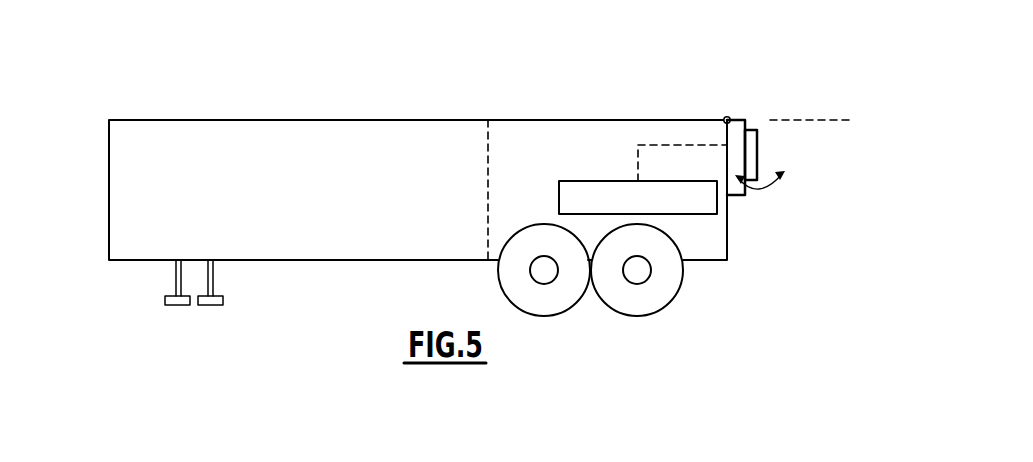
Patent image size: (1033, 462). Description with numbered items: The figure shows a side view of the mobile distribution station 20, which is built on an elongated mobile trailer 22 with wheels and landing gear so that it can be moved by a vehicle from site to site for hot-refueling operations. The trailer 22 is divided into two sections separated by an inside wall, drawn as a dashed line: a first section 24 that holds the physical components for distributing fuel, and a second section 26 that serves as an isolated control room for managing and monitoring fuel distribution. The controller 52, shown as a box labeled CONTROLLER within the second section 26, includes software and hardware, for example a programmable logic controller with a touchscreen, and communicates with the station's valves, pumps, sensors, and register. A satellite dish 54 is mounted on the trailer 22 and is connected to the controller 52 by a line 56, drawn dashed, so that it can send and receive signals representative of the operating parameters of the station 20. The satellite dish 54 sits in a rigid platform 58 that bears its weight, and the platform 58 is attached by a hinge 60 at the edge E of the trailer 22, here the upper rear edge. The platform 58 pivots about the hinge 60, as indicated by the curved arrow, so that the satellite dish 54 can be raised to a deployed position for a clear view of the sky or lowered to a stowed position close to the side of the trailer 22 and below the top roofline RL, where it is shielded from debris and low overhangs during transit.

The mobile distribution station 20 is at (203, 92).
The mobile trailer 22 is at (155, 243).
The first section 24 is at (468, 138).
The second section 26 is at (507, 138).
The controller 52 is at (592, 180).
The satellite dish 54 is at (754, 122).
The line 56 is at (657, 143).
The platform 58 is at (738, 128).
The hinge 60 is at (736, 126).
The edge of the trailer E is at (725, 117).
The top roofline RL is at (840, 119).